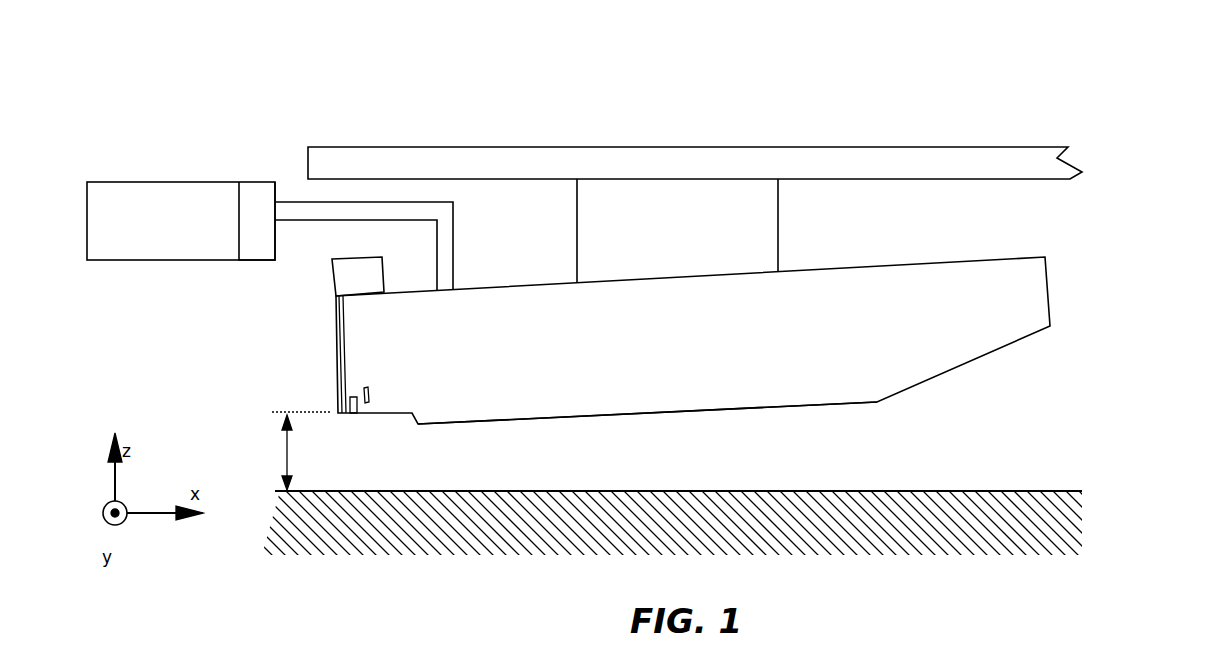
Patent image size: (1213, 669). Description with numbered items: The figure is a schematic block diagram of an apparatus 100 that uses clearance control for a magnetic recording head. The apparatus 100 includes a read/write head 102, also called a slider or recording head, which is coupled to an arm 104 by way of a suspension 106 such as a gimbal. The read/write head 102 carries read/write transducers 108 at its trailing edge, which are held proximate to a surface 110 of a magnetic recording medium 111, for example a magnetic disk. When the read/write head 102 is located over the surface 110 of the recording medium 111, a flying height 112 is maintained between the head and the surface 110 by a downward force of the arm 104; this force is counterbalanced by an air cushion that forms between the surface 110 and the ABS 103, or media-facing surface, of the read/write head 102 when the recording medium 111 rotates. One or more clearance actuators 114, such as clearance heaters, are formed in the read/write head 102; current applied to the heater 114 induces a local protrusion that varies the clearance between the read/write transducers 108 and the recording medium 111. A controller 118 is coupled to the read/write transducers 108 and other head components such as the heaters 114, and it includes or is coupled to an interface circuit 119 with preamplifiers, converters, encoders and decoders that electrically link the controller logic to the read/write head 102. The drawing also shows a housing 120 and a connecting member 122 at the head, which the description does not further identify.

The apparatus 100 is at (1038, 70).
The read/write head 102 is at (928, 270).
The ABS 103 is at (528, 422).
The arm 104 is at (987, 152).
The suspension 106 is at (777, 219).
The read/write transducers 108 is at (348, 397).
The surface 110 is at (930, 491).
The magnetic recording medium 111 is at (947, 542).
The flying height 112 is at (285, 451).
The clearance actuator 114 is at (364, 388).
The controller 118 is at (138, 182).
The interface circuit 119 is at (252, 182).
The actuator housing 120 is at (357, 268).
The actuator rod 122 is at (337, 320).